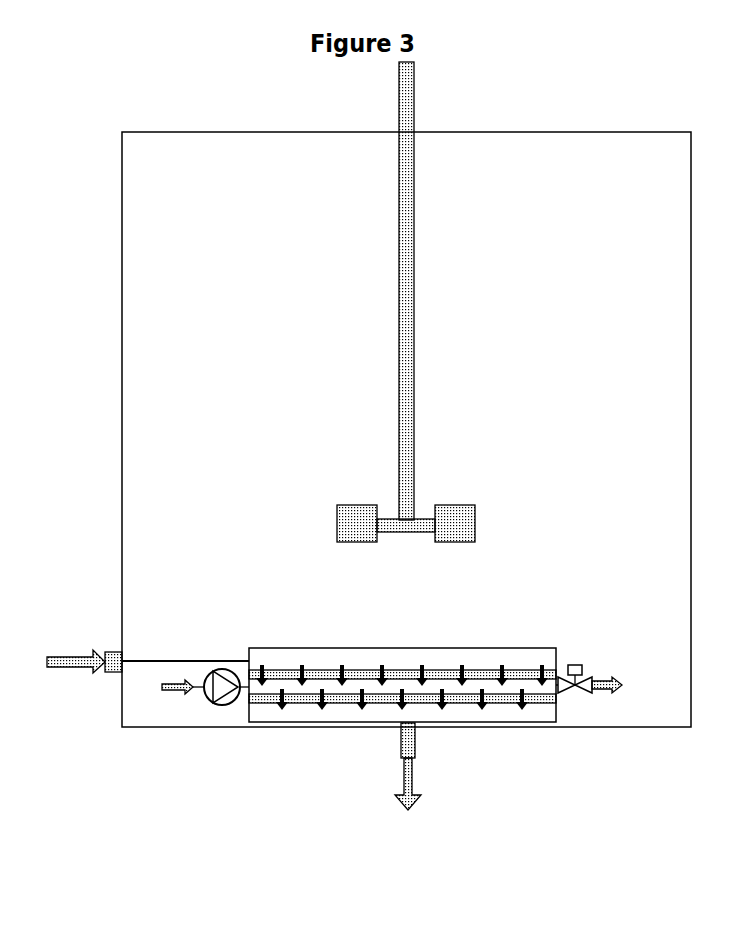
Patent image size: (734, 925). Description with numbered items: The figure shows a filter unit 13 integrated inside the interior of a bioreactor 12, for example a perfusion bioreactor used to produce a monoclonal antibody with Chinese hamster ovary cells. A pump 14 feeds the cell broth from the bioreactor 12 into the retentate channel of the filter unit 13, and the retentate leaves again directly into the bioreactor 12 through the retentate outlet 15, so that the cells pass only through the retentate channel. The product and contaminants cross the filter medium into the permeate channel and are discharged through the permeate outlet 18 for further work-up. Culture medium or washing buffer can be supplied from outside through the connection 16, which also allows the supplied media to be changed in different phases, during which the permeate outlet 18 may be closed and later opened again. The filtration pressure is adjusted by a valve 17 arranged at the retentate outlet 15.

The bioreactor 12 is at (406, 429).
The filter unit 13 is at (413, 727).
The pump 14 is at (218, 707).
The retentate outlet 15 is at (620, 690).
The connection 16 is at (126, 662).
The valve 17 is at (588, 692).
The permeate outlet 18 is at (408, 783).